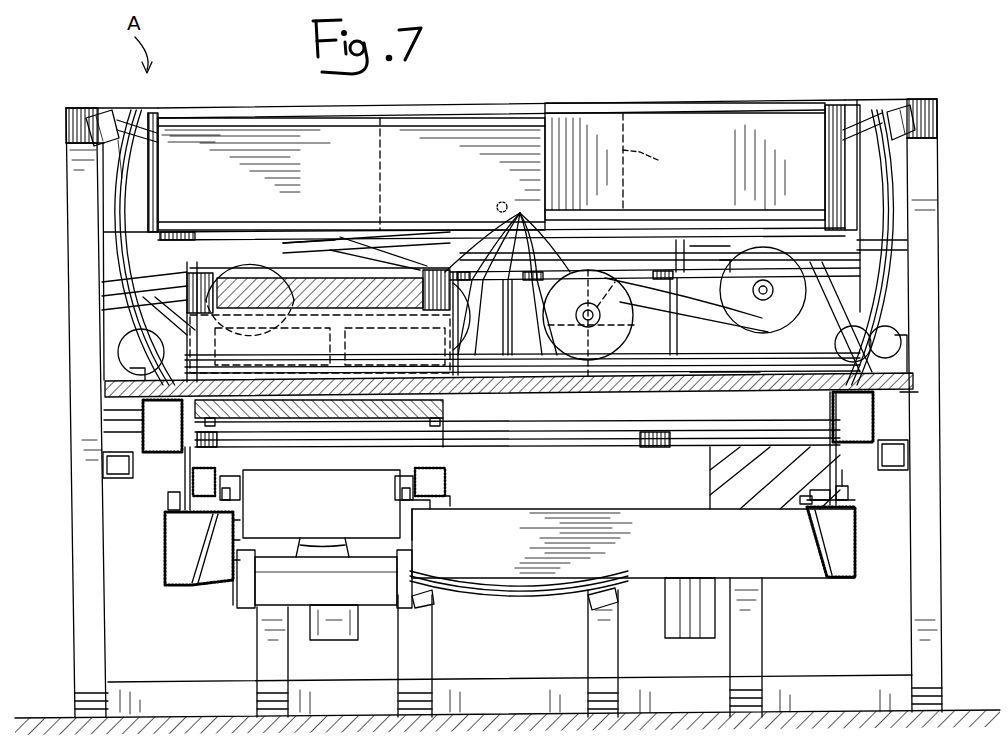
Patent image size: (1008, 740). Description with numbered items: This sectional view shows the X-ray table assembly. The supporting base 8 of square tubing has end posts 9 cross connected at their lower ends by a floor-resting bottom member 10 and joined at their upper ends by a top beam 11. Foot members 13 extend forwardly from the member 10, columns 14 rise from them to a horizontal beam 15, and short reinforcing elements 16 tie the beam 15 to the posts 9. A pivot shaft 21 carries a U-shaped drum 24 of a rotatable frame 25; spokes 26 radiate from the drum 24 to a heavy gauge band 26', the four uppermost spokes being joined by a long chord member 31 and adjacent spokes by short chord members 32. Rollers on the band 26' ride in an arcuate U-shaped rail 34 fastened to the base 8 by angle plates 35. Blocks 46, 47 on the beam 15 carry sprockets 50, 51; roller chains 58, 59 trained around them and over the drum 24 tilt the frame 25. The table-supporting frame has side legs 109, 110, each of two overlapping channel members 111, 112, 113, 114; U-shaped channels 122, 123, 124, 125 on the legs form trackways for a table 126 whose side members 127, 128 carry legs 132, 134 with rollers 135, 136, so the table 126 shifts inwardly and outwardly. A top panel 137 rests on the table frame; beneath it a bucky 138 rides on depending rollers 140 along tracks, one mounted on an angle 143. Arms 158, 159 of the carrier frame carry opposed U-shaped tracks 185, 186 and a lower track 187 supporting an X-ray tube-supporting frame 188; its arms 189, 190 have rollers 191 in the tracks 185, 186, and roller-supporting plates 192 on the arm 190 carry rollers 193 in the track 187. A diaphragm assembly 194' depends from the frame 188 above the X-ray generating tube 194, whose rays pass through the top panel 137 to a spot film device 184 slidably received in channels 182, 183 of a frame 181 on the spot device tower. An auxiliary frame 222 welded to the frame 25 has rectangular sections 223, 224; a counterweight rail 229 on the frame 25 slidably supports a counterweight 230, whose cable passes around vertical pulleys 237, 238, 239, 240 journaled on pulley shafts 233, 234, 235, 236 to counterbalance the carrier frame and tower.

The frame 8 is at (63, 213).
The frame upright 9 is at (72, 270).
The base 10 is at (502, 680).
The drum rail 11 is at (123, 112).
The base plate 13 is at (92, 705).
The leg 14 is at (88, 598).
The support 15 is at (110, 420).
The bearing block 16 is at (110, 466).
The pivot 21 is at (500, 202).
The hidden member 24 is at (653, 159).
The chute 25 is at (143, 284).
The strut 26 is at (426, 273).
The strut 26' is at (136, 179).
The hopper 31 is at (230, 110).
The side frame 32 is at (130, 226).
The inclined beam 34 is at (103, 284).
The lug 35 is at (92, 120).
The plate 46 is at (921, 393).
The bracket 47 is at (138, 372).
The roller 50 is at (885, 328).
The roller 51 is at (118, 352).
The brace 58 is at (862, 312).
The brace 59 is at (142, 322).
The hopper 109 is at (862, 544).
The hopper 110 is at (160, 548).
The hopper wall 111 is at (865, 508).
The trough 112 is at (810, 555).
The support 113 is at (210, 578).
The hopper top 114 is at (165, 526).
The bracket 122 is at (850, 488).
The bracket 123 is at (805, 503).
The bracket 124 is at (168, 503).
The wall 125 is at (189, 560).
The bearing 126 is at (875, 428).
The support 127 is at (920, 393).
The support 128 is at (143, 433).
The rod 132 is at (192, 476).
The rod 134 is at (838, 460).
The wall 135 is at (900, 508).
The wall 136 is at (517, 531).
The bracket 137 is at (910, 348).
The beam 138 is at (450, 412).
The bearing 140 is at (492, 462).
The beam 143 is at (625, 450).
The fitting 158 is at (193, 462).
The rod 159 is at (455, 448).
The plate 181 is at (423, 268).
The chute plate 182 is at (440, 245).
The block 183 is at (200, 272).
The hatched member 184 is at (352, 278).
The wall 185 is at (227, 540).
The fitting 186 is at (422, 510).
The fitting 187 is at (448, 488).
The housing 188 is at (321, 504).
The fitting 189 is at (245, 492).
The fitting 190 is at (388, 491).
The seal 191 is at (240, 505).
The fitting 192 is at (414, 526).
The fitting 193 is at (450, 508).
The outlet 194 is at (341, 640).
The pipe 194' is at (324, 573).
The conveyor 222 is at (713, 245).
The post 223 is at (672, 245).
The beam 224 is at (695, 378).
The top beam 229 is at (450, 135).
The hopper 230 is at (708, 128).
The hidden housing 233 is at (270, 334).
The hidden housing 234 is at (400, 338).
The pulley 235 is at (598, 326).
The pulley 236 is at (753, 292).
The pulley 237 is at (253, 252).
The strut 238 is at (496, 319).
The belt 239 is at (630, 280).
The bracket 240 is at (765, 250).